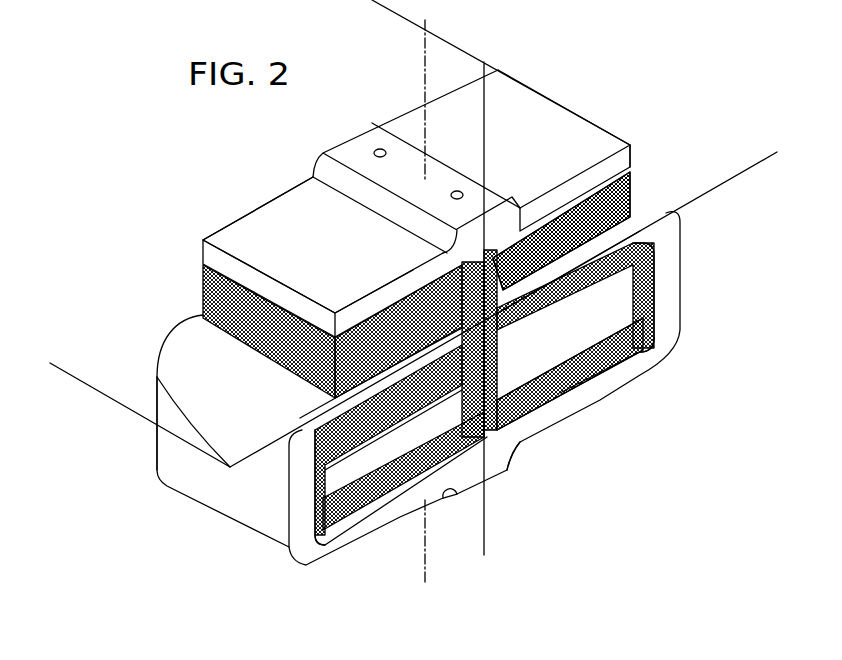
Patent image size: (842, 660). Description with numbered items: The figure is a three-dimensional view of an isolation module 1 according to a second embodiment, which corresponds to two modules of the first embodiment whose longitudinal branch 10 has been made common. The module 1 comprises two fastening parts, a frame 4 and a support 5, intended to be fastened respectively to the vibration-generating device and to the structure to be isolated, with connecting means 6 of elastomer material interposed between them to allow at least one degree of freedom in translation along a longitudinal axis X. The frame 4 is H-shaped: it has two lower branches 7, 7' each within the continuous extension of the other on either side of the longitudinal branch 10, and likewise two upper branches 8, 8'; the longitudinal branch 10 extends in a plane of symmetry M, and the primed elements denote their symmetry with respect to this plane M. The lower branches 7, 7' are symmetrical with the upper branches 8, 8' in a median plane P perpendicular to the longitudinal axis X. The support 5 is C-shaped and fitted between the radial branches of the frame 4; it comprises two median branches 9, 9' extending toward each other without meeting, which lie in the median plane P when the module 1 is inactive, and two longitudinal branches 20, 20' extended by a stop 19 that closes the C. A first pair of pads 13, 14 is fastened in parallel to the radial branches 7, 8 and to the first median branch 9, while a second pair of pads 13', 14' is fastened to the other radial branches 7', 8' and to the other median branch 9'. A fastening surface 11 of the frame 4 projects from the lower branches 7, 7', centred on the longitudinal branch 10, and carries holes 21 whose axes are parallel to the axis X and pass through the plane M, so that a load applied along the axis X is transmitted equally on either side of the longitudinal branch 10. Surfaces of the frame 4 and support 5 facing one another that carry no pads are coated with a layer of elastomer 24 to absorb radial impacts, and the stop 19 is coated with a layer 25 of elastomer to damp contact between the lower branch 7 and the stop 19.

The isolation module 1 is at (92, 338).
The frame 4 is at (280, 210).
The support 5 is at (676, 338).
The connecting means 6 is at (561, 231).
The lower branch 7 is at (570, 380).
The lower branch 7' is at (393, 474).
The upper branch 8 is at (567, 139).
The upper branch 8' is at (300, 245).
The median branch 9 is at (610, 262).
The median branch 9' is at (343, 373).
The longitudinal branch 10 is at (455, 300).
The fastening surface 11 is at (398, 152).
The pad 13 is at (635, 336).
The pad 13' is at (399, 462).
The pad 14 is at (606, 292).
The pad 14' is at (298, 342).
The stop 19 is at (547, 417).
The longitudinal branch 20 is at (624, 336).
The longitudinal branch 20' is at (347, 502).
The hole 21 is at (373, 148).
The layer of elastomer 24 is at (330, 545).
The layer of elastomer 25 is at (577, 383).
The longitudinal axis X is at (420, 58).
The plane of symmetry M is at (470, 68).
The median plane P is at (257, 454).